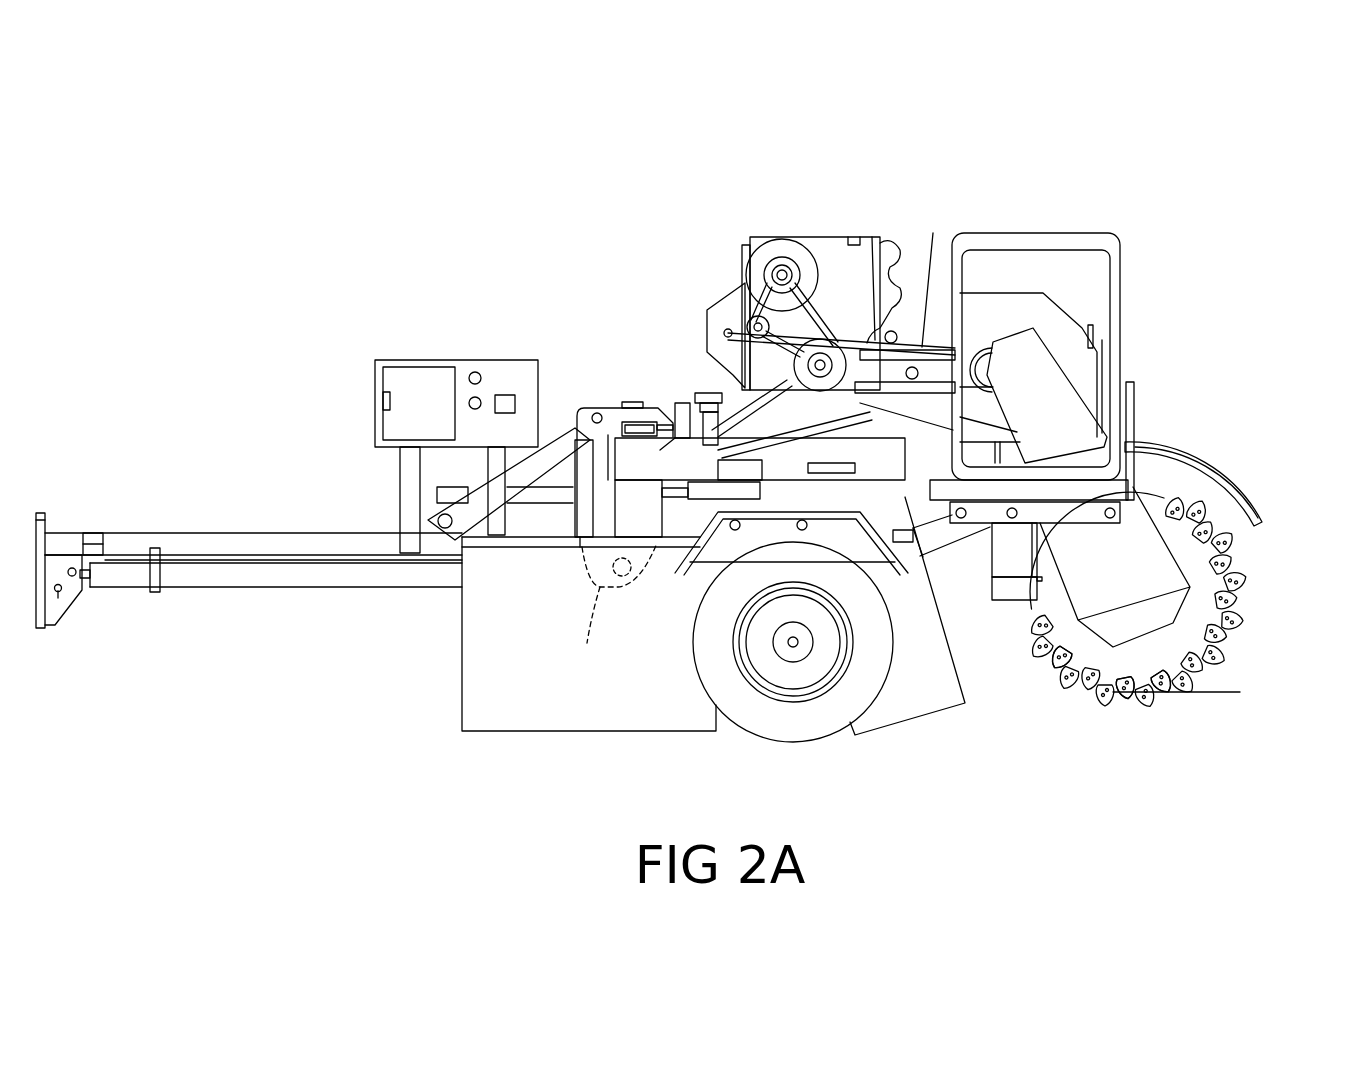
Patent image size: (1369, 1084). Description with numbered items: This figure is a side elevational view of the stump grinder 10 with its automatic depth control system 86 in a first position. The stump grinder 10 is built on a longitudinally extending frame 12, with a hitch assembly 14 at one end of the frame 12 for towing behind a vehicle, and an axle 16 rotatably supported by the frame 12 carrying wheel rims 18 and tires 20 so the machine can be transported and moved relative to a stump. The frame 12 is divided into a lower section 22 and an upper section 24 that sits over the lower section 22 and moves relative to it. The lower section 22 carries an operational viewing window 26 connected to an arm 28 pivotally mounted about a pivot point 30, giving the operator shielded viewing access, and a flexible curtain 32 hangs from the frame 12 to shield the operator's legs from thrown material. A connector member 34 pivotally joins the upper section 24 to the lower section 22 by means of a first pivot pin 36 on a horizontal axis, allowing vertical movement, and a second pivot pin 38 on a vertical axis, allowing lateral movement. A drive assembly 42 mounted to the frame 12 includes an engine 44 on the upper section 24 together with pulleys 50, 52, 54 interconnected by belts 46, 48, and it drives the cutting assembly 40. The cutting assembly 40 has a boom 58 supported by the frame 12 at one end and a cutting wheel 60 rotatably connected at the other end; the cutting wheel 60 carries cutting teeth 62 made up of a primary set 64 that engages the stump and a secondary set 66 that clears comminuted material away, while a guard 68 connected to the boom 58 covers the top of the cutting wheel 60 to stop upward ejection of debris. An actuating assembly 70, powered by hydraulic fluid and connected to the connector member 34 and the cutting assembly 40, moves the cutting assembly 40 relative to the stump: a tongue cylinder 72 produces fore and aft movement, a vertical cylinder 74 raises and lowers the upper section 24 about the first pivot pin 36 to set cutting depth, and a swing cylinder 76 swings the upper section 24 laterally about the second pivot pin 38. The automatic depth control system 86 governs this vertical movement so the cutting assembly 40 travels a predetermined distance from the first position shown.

The stump grinder 10 is at (192, 340).
The frame 12 is at (286, 596).
The hitch assembly 14 is at (44, 513).
The axle 16 is at (800, 647).
The wheel rims 18 is at (748, 633).
The tires 20 is at (778, 728).
The lower section 22 is at (190, 535).
The upper section 24 is at (613, 480).
The operational viewing window 26 is at (1073, 233).
The arm 28 is at (908, 495).
The pivot point 30 is at (660, 540).
The flexible curtain 32 is at (467, 706).
The connector member 34 is at (580, 540).
The first pivot pin 36 is at (571, 623).
The second pivot pin 38 is at (632, 401).
The cutting assembly 40 is at (1268, 477).
The drive assembly 42 is at (856, 228).
The engine 44 is at (800, 237).
The belt 46 is at (922, 345).
The belt 48 is at (864, 237).
The pulley 50 is at (770, 258).
The pulley 52 is at (742, 268).
The pulley 54 is at (838, 343).
The boom 58 is at (1178, 587).
The cutting wheel 60 is at (1178, 676).
The cutting teeth 62 is at (1112, 712).
The primary set 64 is at (1064, 665).
The secondary set 66 is at (1155, 694).
The guard 68 is at (1188, 442).
The actuating assembly 70 is at (544, 420).
The tongue cylinder 72 is at (108, 577).
The vertical cylinder 74 is at (550, 440).
The swing cylinder 76 is at (660, 415).
The automatic depth control system 86 is at (466, 350).